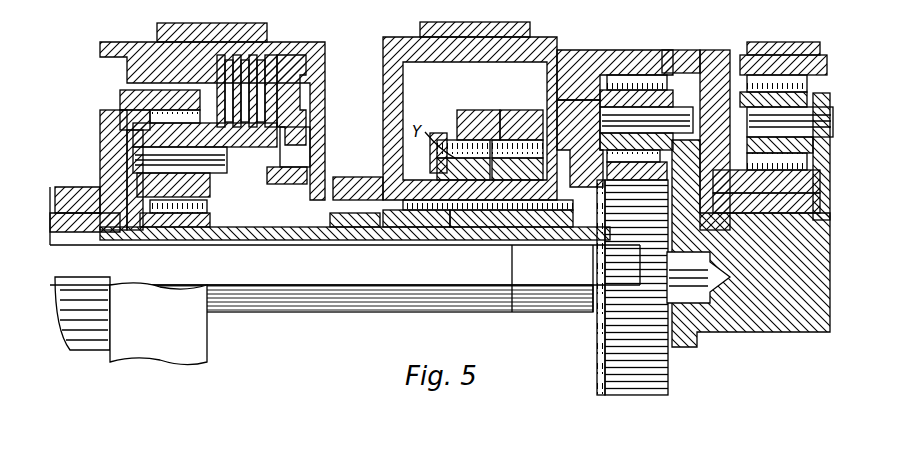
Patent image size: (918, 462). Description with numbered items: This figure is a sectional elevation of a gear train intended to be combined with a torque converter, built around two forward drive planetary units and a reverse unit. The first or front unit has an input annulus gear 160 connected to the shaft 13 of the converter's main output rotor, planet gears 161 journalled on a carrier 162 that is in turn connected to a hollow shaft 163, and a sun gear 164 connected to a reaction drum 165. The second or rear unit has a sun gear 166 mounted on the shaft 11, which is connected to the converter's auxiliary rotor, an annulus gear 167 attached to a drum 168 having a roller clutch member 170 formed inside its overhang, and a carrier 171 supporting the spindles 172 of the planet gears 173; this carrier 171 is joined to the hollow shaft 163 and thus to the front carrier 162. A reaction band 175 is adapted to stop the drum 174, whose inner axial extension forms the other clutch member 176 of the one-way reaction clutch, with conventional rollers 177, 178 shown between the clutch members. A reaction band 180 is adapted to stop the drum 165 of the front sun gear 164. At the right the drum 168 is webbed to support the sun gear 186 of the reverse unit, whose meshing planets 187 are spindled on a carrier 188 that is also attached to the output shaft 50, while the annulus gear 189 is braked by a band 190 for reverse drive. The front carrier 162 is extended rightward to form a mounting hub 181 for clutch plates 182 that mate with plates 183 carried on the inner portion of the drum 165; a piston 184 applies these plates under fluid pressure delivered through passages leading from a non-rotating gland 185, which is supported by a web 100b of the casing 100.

The shaft 11 is at (270, 312).
The shaft 13 is at (70, 215).
The output shaft 50 is at (773, 300).
The casing 100 is at (340, 177).
The clutch member portion 100b is at (365, 215).
The input annulus gear 160 is at (130, 108).
The planet gears 161 is at (148, 118).
The carrier 162 is at (130, 185).
The hollow shaft 163 is at (270, 238).
The sun gear 164 is at (178, 215).
The reaction drum 165 is at (318, 45).
The sun gear 166 is at (605, 335).
The annulus gear 167 is at (652, 62).
The drum 168 is at (575, 50).
The roller clutch member 170 is at (433, 163).
The carrier 171 is at (583, 100).
The spindles 172 is at (622, 120).
The planet gears 173 is at (665, 100).
The drum 174 is at (395, 90).
The reaction band 175 is at (440, 27).
The one-way clutch member 176 is at (483, 205).
The rollers 177 is at (475, 145).
The rollers 178 is at (515, 148).
The reaction band 180 is at (162, 38).
The mounting hub 181 is at (290, 168).
The clutch plates 182 is at (258, 185).
The clutch plates 183 is at (272, 55).
The piston 184 is at (300, 100).
The non-rotating gland 185 is at (428, 215).
The sun gear 186 is at (768, 200).
The planets 187 is at (747, 95).
The carrier 188 is at (815, 192).
The annulus gear 189 is at (800, 48).
The band 190 is at (780, 42).